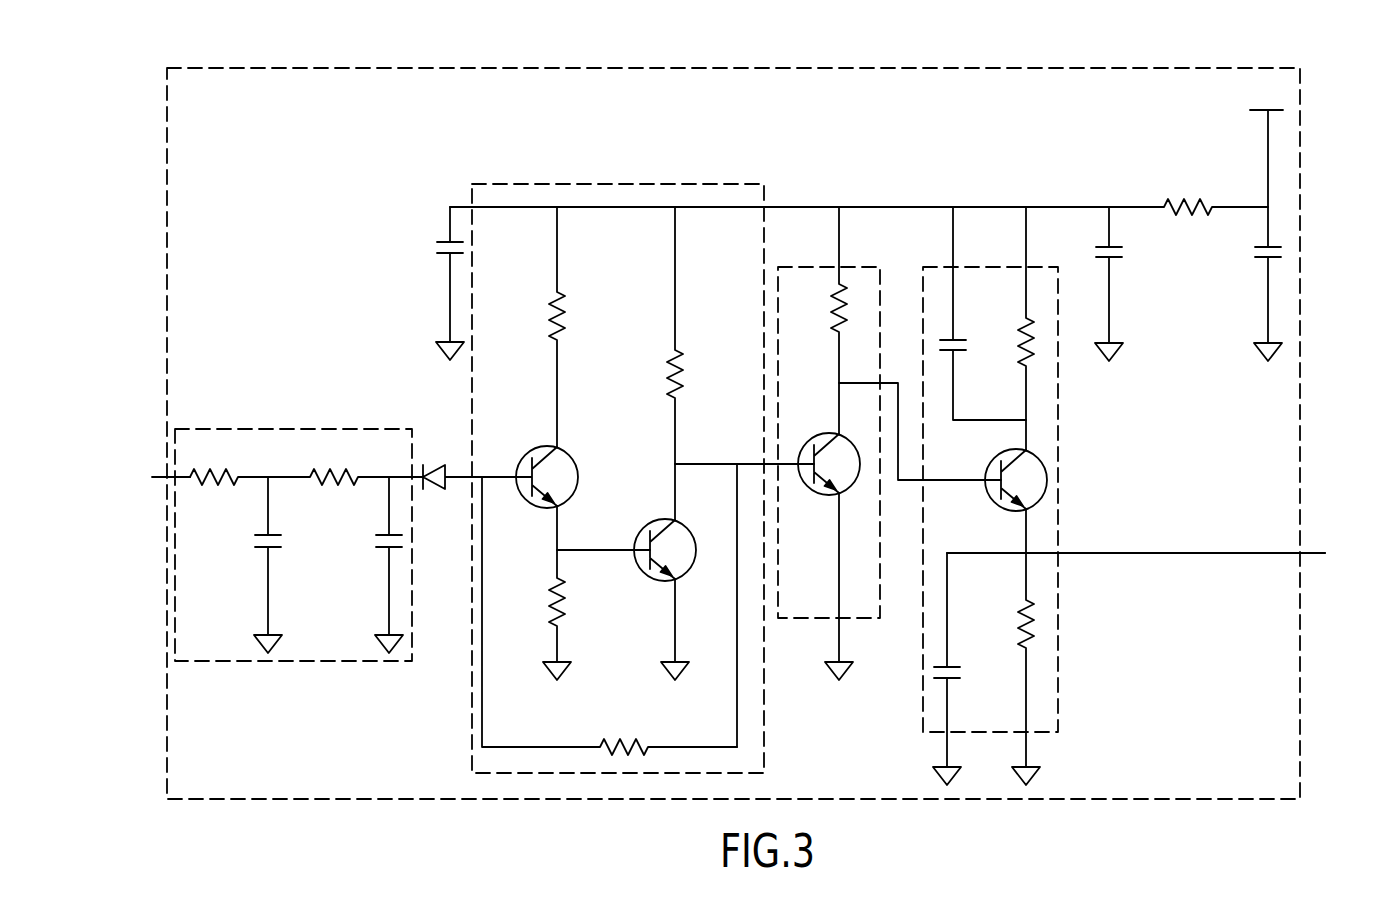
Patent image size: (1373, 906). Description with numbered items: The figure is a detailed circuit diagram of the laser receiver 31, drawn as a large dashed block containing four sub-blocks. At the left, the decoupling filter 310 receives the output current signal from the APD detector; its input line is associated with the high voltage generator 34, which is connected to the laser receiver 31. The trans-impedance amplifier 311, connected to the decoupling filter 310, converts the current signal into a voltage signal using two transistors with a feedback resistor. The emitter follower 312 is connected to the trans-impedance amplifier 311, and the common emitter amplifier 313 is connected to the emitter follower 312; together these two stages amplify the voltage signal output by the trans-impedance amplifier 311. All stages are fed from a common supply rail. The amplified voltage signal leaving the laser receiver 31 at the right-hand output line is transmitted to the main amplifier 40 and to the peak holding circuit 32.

The laser receiver 31 is at (1148, 70).
The decoupling filter 310 is at (294, 429).
The trans-impedance amplifier 311 is at (592, 184).
The emitter follower 312 is at (850, 267).
The common emitter amplifier 313 is at (1062, 478).
The high voltage generator 34 is at (151, 472).
The peak holding circuit 32 is at (1151, 536).
The main amplifier 40 is at (1327, 572).